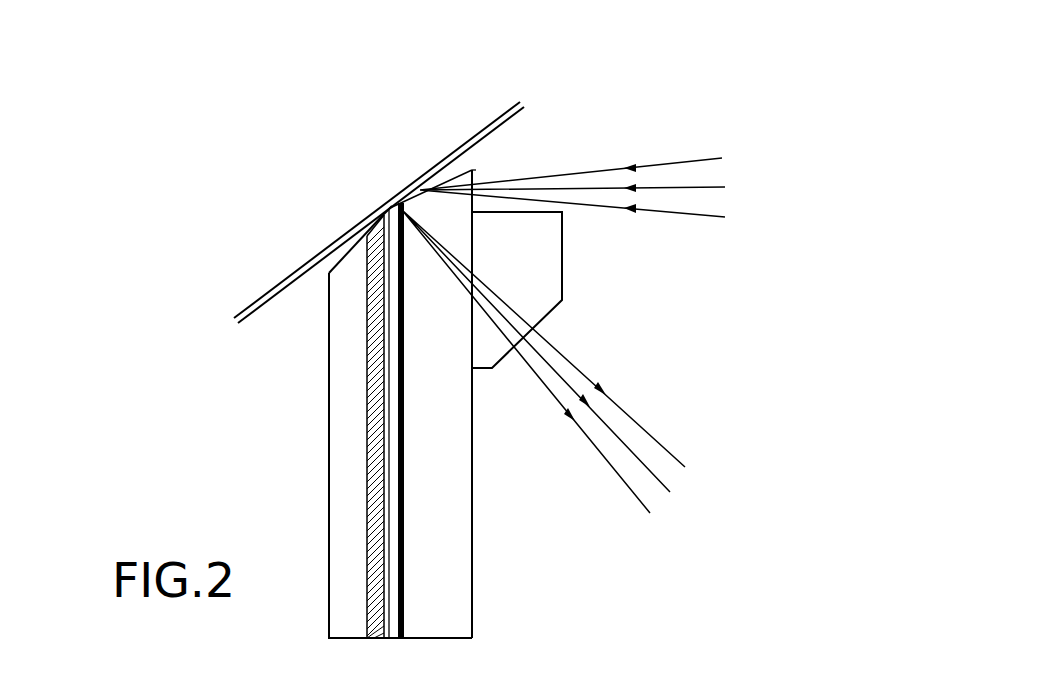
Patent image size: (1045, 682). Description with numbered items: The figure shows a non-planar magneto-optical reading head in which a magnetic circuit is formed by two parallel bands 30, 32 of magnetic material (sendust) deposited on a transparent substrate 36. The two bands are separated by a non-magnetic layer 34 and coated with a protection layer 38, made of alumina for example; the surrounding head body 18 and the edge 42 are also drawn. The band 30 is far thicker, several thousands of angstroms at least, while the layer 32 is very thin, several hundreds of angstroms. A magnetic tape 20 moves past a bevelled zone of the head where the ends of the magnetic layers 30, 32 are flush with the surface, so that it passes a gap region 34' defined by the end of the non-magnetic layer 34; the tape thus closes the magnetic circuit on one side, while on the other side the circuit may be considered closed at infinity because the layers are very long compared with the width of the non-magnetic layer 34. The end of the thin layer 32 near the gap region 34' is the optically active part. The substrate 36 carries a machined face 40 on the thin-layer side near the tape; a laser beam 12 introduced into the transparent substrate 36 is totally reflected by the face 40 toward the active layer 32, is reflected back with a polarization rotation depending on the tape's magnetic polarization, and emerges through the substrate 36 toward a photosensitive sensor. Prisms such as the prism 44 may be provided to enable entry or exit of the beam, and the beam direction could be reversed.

The laser beam 12 is at (572, 170).
The optical connector body 18 is at (326, 477).
The magnetic tape 20 is at (272, 284).
The band of magnetic material 30 is at (367, 382).
The thin layer of magnetic material 32 is at (404, 370).
The non-magnetic layer 34 is at (461, 424).
The gap region 34' is at (379, 176).
The transparent substrate 36 is at (458, 421).
The protection layer 38 is at (347, 420).
The machined face 40 is at (455, 168).
The edge of window 42 is at (480, 174).
The prism 44 is at (548, 266).